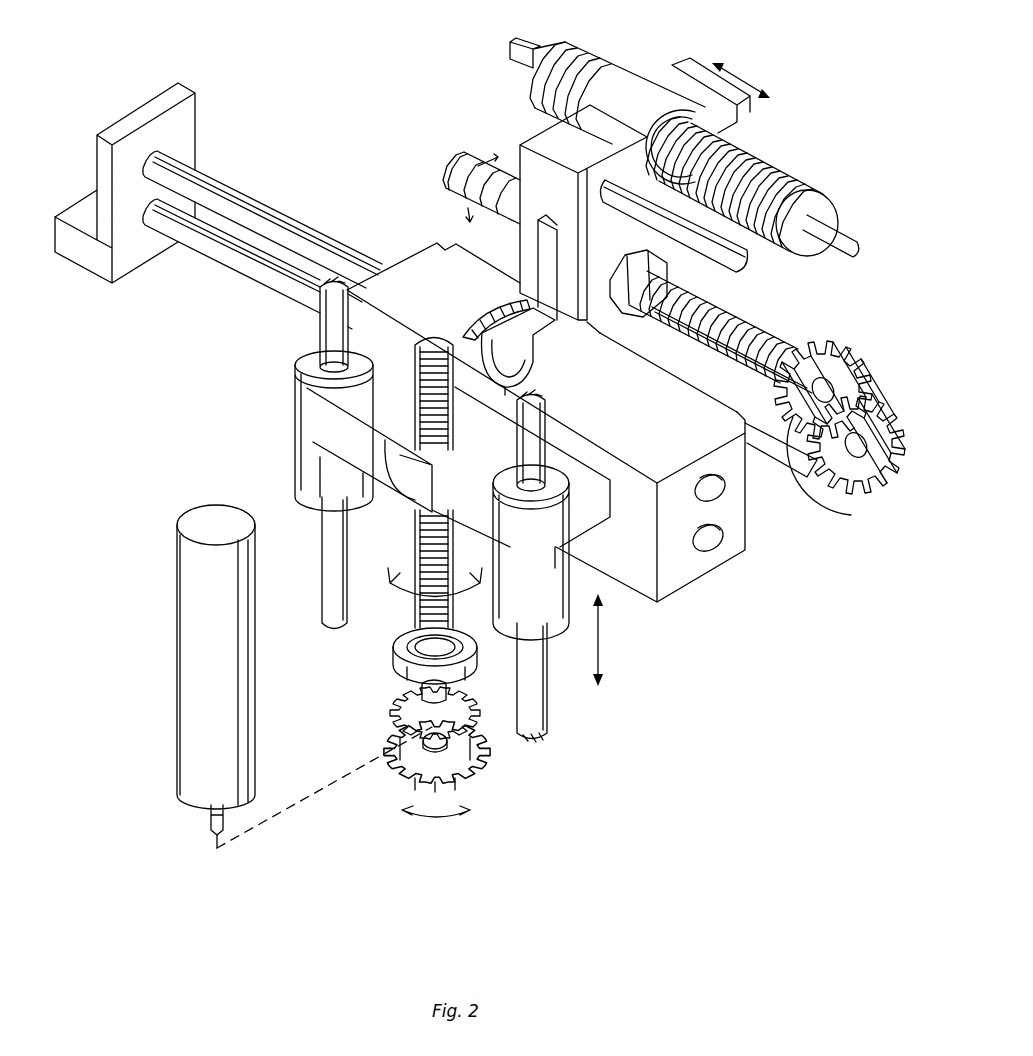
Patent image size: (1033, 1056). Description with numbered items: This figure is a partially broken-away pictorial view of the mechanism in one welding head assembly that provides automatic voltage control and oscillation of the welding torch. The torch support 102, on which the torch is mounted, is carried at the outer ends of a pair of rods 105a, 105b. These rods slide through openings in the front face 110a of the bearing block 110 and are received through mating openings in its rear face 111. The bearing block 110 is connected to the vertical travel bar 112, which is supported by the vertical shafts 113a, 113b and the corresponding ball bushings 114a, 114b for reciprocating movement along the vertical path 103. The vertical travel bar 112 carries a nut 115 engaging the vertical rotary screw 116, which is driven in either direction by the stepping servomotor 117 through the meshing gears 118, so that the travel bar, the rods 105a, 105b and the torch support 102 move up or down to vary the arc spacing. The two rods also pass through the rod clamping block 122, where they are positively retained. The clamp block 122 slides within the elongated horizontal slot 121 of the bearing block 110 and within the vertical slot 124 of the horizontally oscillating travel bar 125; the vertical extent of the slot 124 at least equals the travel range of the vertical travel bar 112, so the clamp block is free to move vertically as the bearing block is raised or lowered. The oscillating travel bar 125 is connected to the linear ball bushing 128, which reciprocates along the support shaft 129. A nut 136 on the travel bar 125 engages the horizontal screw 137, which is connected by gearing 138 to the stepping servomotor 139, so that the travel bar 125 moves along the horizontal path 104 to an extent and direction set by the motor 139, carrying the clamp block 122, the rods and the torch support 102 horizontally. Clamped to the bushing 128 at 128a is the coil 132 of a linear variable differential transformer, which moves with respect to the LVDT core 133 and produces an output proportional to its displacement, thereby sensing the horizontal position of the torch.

The torch support 102 is at (80, 205).
The vertical path 103 is at (615, 652).
The horizontal path 104 is at (753, 75).
The rod 105a is at (283, 232).
The rod 105b is at (258, 278).
The bearing block 110 is at (646, 416).
The front face of the bearing block 110a is at (407, 263).
The rear face of the bearing block 111 is at (732, 527).
The vertical travel bar 112 is at (297, 405).
The vertical shaft 113a is at (333, 338).
The vertical shaft 113b is at (525, 437).
The ball bushing 114a is at (305, 475).
The ball bushing 114b is at (553, 615).
The nut 115 is at (407, 500).
The vertical rotary screw 116 is at (420, 620).
The stepping servomotor 117 is at (190, 597).
The meshing gears 118 is at (388, 716).
The elongated horizontal slot 121 is at (497, 330).
The rod clamping block 122 is at (535, 342).
The vertical slot 124 is at (547, 272).
The horizontally oscillating travel bar 125 is at (633, 329).
The linear ball bushing 128 is at (622, 172).
The clamp location on ball bushing 128a is at (643, 70).
The support shaft 129 is at (748, 273).
The LVDT coil 132 is at (790, 168).
The LVDT core 133 is at (844, 243).
The nut 136 is at (644, 254).
The horizontal screw 137 is at (710, 343).
The gearing 138 is at (889, 397).
The stepping servomotor 139 is at (808, 498).